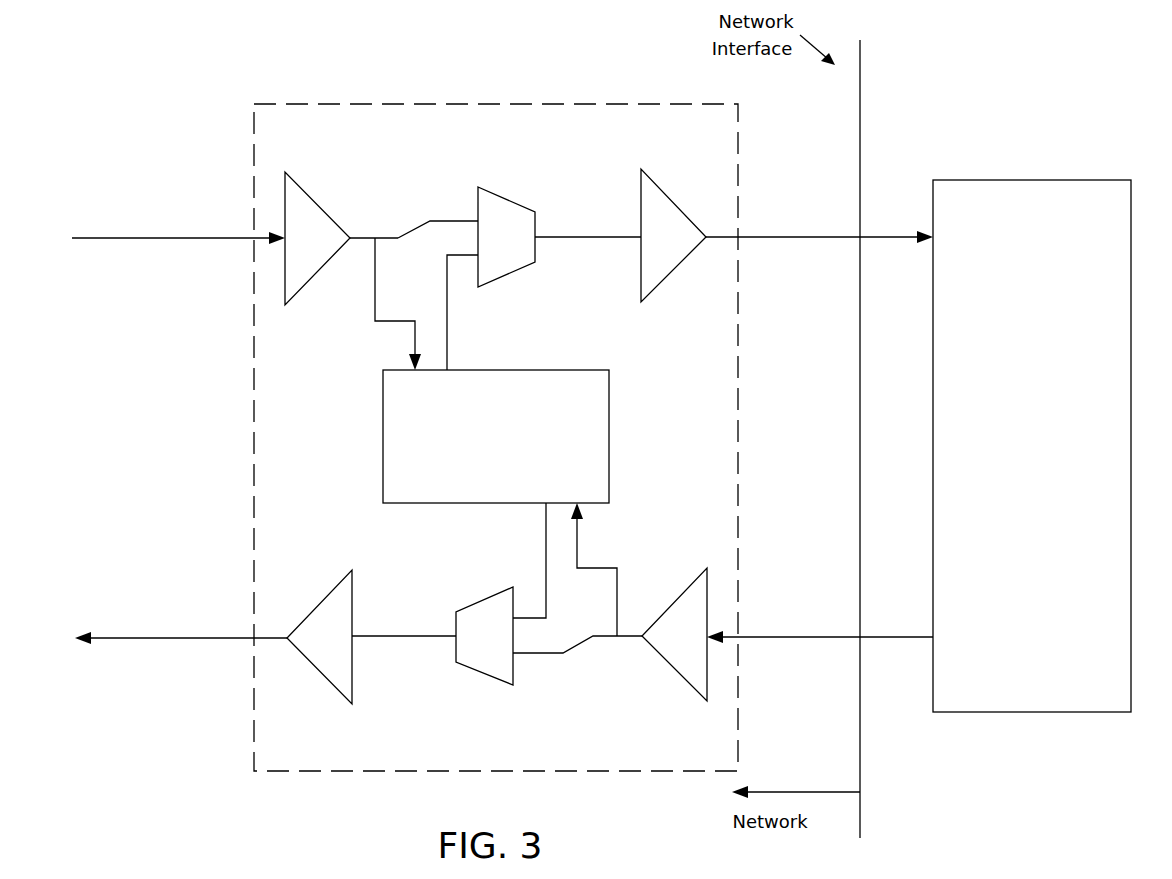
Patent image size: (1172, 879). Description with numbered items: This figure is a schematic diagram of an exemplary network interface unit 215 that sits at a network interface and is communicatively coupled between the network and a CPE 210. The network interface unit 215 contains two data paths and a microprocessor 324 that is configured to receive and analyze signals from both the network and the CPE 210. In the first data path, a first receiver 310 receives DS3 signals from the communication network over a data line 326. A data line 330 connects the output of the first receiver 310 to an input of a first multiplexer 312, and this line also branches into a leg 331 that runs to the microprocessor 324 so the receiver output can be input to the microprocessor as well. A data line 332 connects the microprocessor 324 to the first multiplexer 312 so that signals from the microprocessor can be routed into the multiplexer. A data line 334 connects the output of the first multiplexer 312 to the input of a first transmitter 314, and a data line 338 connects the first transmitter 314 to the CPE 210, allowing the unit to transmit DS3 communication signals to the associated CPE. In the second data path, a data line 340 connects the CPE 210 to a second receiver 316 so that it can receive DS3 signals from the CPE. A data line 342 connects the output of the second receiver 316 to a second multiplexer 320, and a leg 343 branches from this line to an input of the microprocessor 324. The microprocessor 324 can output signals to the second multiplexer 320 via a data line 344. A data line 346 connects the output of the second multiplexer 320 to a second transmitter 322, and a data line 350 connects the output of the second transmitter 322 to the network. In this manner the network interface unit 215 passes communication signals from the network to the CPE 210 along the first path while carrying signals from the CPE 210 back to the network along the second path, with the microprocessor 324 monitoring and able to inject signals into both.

The network interface unit 215 is at (477, 102).
The CPE 210 is at (1032, 446).
The data line 326 is at (178, 252).
The first receiver 310 is at (317, 238).
The data line 330 is at (431, 219).
The first multiplexer 312 is at (506, 237).
The leg 331 is at (378, 304).
The data line 332 is at (467, 312).
The data line 334 is at (588, 252).
The first transmitter 314 is at (673, 235).
The data line 338 is at (819, 227).
The microprocessor 324 is at (496, 436).
The data line 344 is at (526, 560).
The leg 343 is at (606, 569).
The data line 342 is at (577, 657).
The second receiver 316 is at (674, 634).
The data line 340 is at (820, 627).
The second multiplexer 320 is at (484, 636).
The data line 346 is at (404, 623).
The second transmitter 322 is at (319, 637).
The data line 350 is at (181, 646).